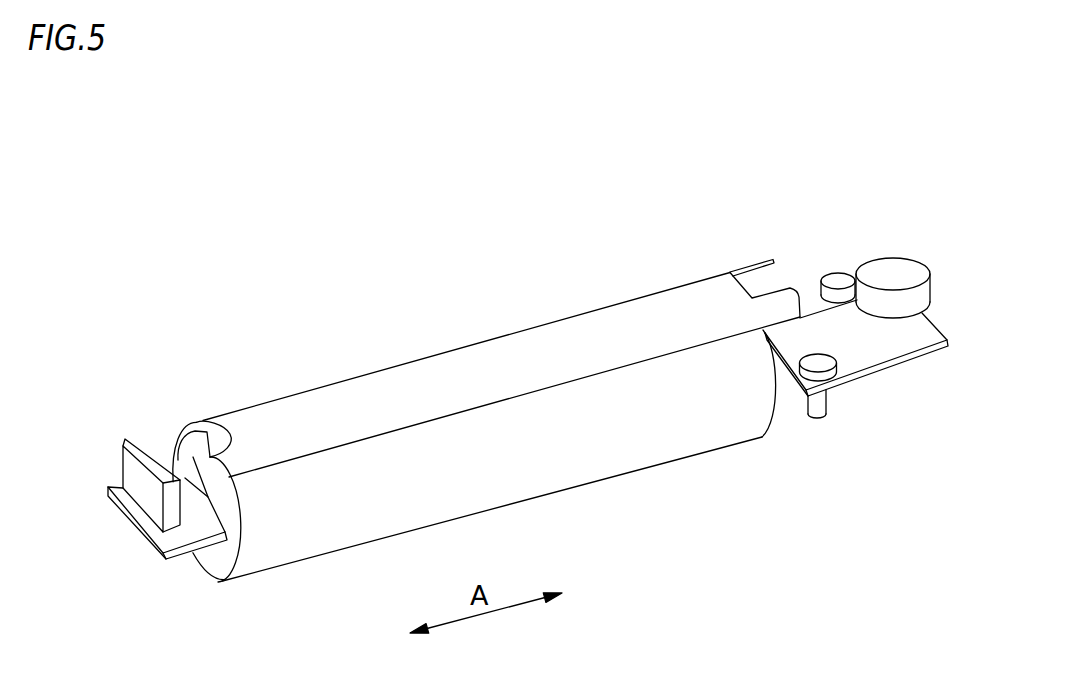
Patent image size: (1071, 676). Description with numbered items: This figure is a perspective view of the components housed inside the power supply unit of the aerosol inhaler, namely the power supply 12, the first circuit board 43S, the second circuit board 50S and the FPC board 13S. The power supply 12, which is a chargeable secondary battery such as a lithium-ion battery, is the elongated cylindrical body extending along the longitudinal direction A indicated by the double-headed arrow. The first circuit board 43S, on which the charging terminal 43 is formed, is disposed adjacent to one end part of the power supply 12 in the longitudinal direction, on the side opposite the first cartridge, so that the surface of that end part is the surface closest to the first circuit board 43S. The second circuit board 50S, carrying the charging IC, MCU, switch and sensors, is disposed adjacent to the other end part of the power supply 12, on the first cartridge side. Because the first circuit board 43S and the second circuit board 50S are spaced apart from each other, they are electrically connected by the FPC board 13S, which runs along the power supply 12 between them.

The power supply 12 is at (407, 510).
The FPC board 13S is at (398, 362).
The charging terminal 43 is at (136, 469).
The first circuit board 43S is at (134, 527).
The second circuit board 50S is at (818, 313).